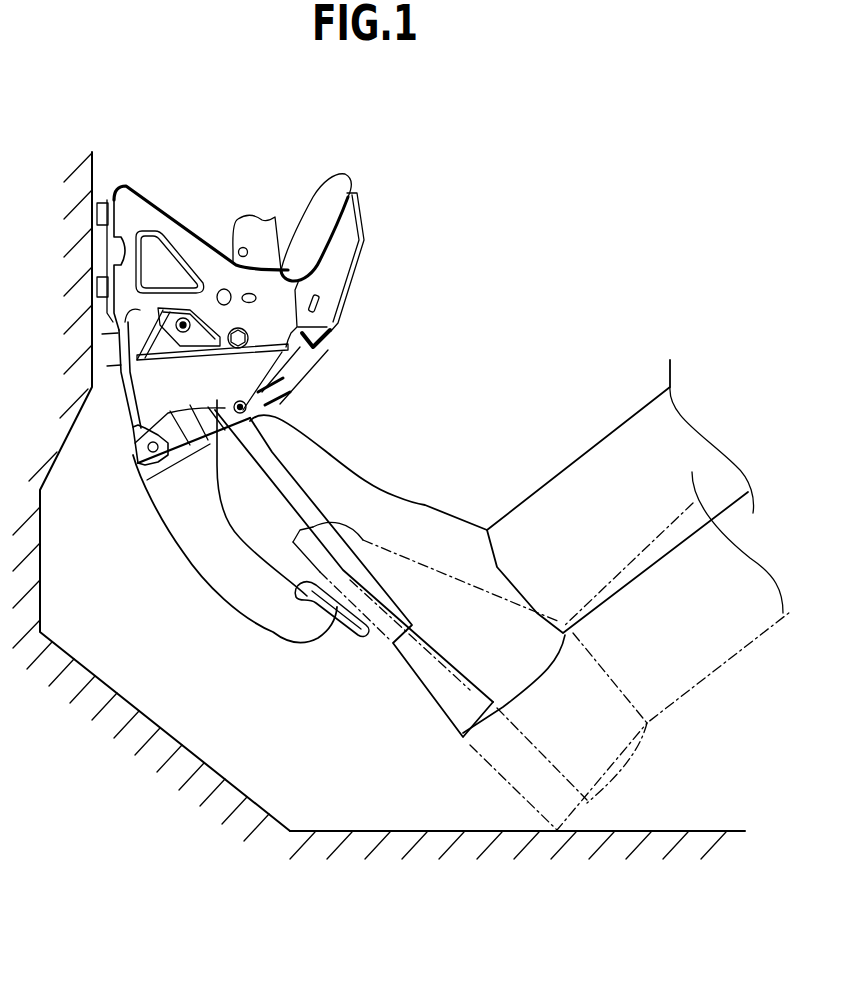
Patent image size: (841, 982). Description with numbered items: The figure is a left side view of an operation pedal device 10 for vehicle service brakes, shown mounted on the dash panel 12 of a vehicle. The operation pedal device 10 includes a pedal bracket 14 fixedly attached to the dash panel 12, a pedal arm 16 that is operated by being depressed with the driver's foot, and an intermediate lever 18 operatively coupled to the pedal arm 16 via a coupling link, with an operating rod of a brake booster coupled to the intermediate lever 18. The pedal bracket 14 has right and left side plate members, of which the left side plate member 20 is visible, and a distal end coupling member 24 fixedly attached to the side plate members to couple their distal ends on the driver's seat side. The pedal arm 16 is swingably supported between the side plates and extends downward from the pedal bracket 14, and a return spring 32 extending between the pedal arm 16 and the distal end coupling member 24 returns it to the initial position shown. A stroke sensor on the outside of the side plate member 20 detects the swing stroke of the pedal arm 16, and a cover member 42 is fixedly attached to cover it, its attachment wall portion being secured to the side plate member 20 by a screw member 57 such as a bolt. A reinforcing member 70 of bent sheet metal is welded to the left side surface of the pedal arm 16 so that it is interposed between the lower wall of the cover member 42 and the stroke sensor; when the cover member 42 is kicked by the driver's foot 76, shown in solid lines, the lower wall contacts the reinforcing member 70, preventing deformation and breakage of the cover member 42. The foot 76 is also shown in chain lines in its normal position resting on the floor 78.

The operation pedal device 10 is at (385, 122).
The dash panel 12 is at (95, 172).
The pedal bracket 14 is at (224, 162).
The pedal arm 16 is at (232, 580).
The intermediate lever 18 is at (295, 222).
The side plate member 20 is at (153, 220).
The distal end coupling member 24 is at (333, 273).
The return spring 32 is at (277, 383).
The cover member 42 is at (118, 421).
The screw member 57 is at (205, 282).
The reinforcing member 70 is at (142, 460).
The foot 76 is at (427, 520).
The floor 78 is at (667, 830).